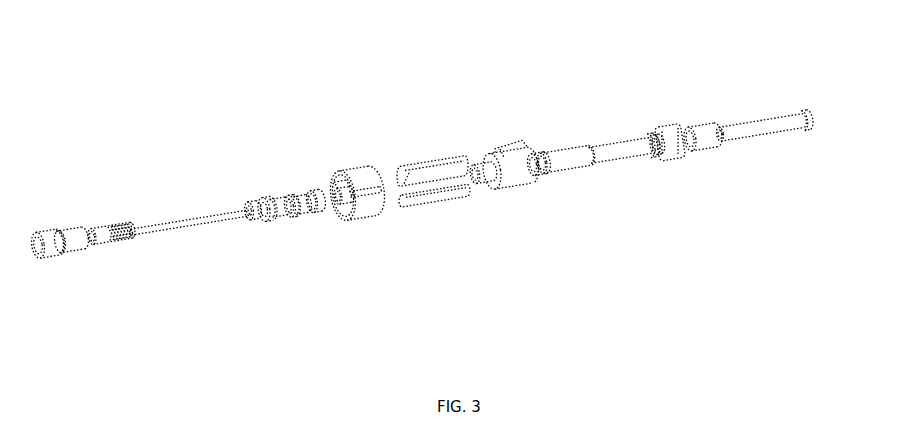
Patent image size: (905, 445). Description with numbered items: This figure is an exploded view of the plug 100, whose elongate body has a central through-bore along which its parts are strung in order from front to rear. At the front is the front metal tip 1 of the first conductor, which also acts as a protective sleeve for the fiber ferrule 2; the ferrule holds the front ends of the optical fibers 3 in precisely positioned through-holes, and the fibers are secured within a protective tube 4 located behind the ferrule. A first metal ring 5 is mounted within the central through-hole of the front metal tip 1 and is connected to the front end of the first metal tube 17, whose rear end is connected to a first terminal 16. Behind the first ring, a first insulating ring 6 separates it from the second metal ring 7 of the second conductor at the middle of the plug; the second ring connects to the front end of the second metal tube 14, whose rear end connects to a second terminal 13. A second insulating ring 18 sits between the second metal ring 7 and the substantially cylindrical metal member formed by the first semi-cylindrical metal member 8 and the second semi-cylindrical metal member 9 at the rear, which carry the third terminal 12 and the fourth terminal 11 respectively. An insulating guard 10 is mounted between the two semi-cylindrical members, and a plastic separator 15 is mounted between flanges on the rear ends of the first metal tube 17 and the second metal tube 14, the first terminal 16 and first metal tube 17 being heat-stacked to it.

The plug 100 is at (256, 107).
The front metal tip 1 is at (70, 255).
The fiber ferrule 2 is at (104, 243).
The optical fibers 3 is at (128, 235).
The protective tube 4 is at (210, 220).
The first metal ring 5 is at (253, 201).
The first insulating ring 6 is at (274, 222).
The second metal ring 7 is at (299, 194).
The first semi-cylindrical metal member 8 is at (362, 222).
The second semi-cylindrical metal member 9 is at (352, 169).
The insulating guard 10 is at (491, 150).
The fourth terminal 11 is at (439, 156).
The third terminal 12 is at (445, 207).
The second terminal 13 is at (556, 158).
The second metal tube 14 is at (624, 162).
The plastic separator 15 is at (668, 127).
The first terminal 16 is at (705, 150).
The first metal tube 17 is at (765, 140).
The second insulating ring 18 is at (318, 216).